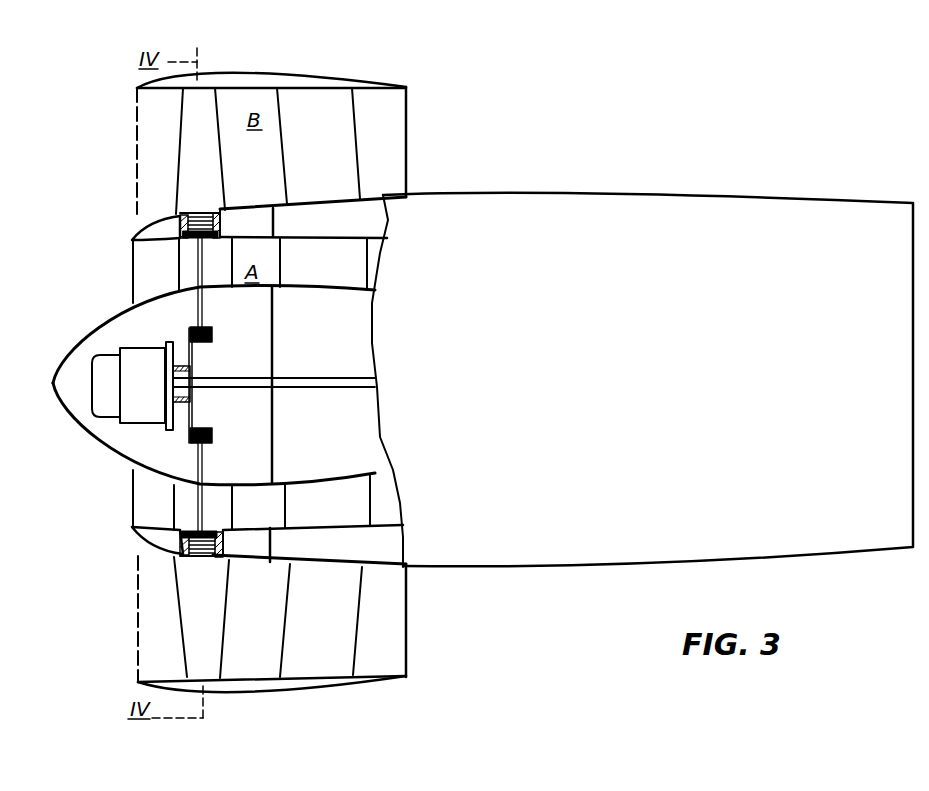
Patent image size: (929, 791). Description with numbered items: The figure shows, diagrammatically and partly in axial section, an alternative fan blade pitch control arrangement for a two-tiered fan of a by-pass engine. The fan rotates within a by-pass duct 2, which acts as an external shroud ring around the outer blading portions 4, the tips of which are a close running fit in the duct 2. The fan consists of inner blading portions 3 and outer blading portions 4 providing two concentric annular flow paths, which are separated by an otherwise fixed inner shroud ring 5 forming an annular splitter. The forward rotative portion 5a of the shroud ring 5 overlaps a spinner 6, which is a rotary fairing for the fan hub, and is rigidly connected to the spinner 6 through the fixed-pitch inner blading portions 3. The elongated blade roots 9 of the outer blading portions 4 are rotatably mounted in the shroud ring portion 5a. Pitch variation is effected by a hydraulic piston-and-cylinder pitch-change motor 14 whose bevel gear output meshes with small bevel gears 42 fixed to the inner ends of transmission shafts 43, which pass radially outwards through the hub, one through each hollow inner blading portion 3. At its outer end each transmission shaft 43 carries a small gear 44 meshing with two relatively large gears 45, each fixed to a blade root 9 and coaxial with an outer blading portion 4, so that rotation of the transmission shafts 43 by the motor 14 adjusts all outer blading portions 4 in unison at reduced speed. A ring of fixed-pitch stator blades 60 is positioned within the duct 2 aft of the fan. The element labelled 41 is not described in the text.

The by-pass duct 2 is at (245, 74).
The inner blading portions 3 is at (178, 283).
The outer blading portions 4 is at (185, 135).
The inner shroud ring 5 is at (370, 210).
The forward rotative portion of the inner shroud ring 5a is at (140, 235).
The spinner 6 is at (103, 435).
The blade roots 9 is at (203, 216).
The pitch-change motor 14 is at (147, 352).
The support bar 41 is at (193, 357).
The small bevel gears 42 is at (212, 337).
The transmission shafts 43 is at (197, 306).
The small gear 44 is at (192, 237).
The relatively large gears 45 is at (217, 237).
The stator blades 60 is at (347, 137).